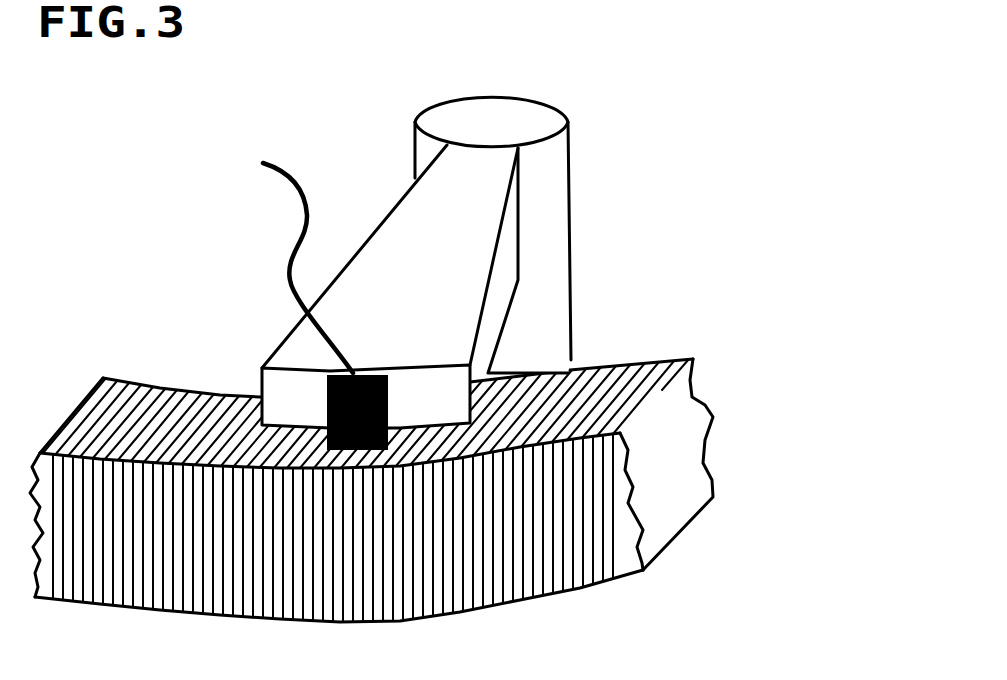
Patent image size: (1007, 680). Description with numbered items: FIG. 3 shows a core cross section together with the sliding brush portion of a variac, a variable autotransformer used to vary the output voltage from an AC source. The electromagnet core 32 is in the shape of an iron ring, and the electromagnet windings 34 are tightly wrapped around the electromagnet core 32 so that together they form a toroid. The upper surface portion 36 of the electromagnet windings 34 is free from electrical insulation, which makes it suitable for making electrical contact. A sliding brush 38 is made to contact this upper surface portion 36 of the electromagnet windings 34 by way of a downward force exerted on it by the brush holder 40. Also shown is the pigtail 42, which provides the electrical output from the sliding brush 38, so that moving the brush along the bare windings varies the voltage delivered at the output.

The electromagnet core 32 is at (418, 487).
The electromagnet windings 34 is at (572, 590).
The upper surface portion 36 is at (163, 407).
The sliding brush 38 is at (327, 398).
The brush holder 40 is at (448, 243).
The pigtail 42 is at (302, 230).